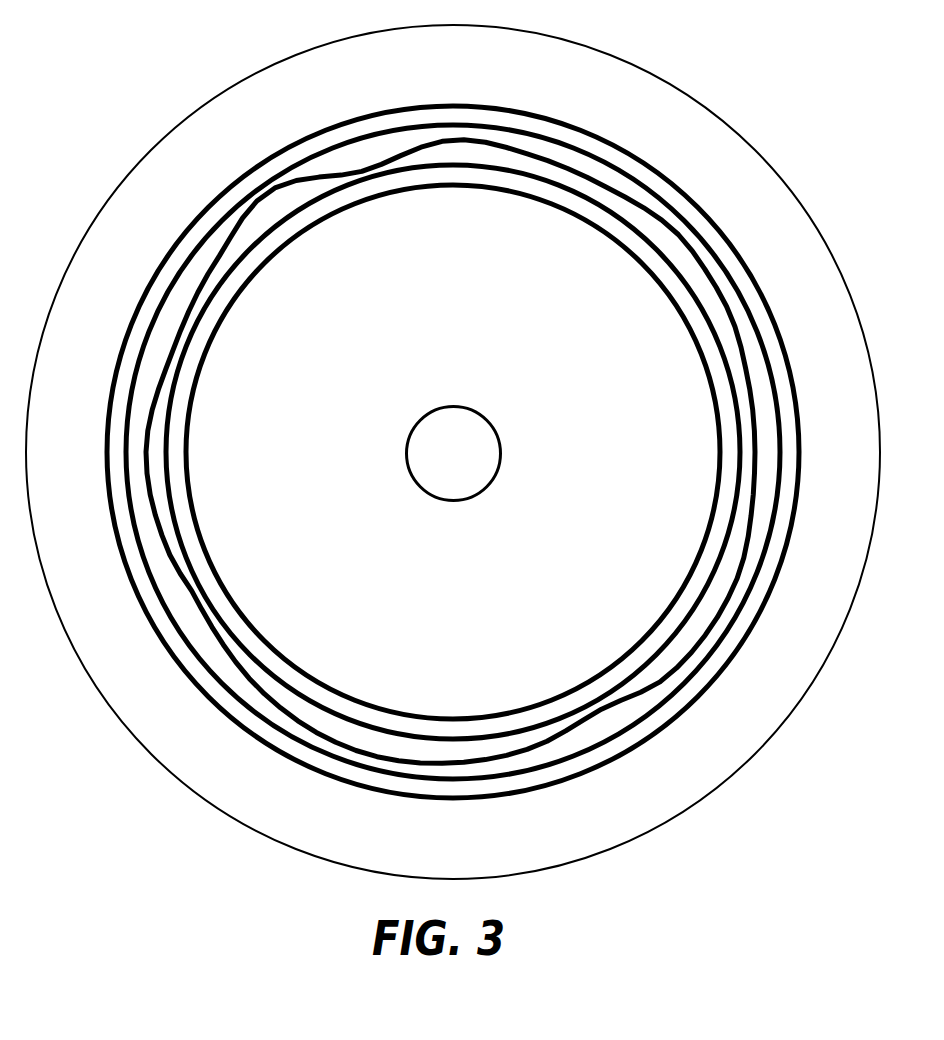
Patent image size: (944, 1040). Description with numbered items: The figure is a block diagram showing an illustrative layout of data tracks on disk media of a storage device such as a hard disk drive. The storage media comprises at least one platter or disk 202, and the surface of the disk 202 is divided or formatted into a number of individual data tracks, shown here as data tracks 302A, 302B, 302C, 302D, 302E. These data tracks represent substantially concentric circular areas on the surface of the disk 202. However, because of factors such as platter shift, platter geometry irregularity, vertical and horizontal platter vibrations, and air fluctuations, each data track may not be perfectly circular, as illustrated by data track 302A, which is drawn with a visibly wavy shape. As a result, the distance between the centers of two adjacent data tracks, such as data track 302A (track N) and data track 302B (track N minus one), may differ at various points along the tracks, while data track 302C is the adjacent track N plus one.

The disk 202 is at (471, 360).
The data track 302A is at (675, 237).
The data track 302B is at (621, 167).
The data track 302C is at (622, 224).
The data track 302D is at (618, 109).
The data track 302E is at (650, 277).